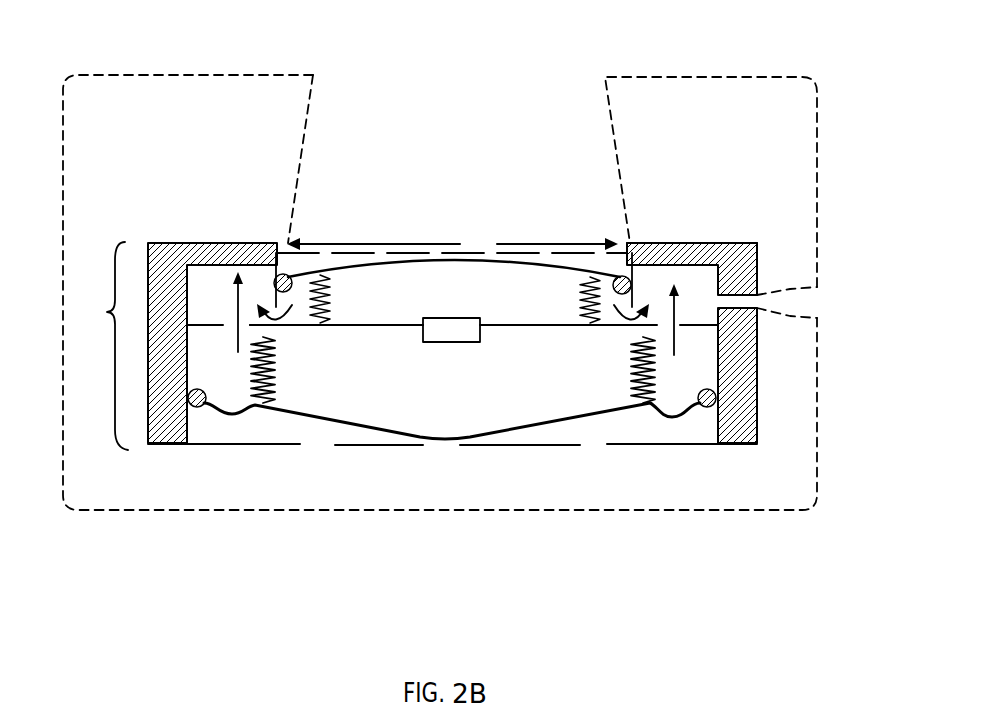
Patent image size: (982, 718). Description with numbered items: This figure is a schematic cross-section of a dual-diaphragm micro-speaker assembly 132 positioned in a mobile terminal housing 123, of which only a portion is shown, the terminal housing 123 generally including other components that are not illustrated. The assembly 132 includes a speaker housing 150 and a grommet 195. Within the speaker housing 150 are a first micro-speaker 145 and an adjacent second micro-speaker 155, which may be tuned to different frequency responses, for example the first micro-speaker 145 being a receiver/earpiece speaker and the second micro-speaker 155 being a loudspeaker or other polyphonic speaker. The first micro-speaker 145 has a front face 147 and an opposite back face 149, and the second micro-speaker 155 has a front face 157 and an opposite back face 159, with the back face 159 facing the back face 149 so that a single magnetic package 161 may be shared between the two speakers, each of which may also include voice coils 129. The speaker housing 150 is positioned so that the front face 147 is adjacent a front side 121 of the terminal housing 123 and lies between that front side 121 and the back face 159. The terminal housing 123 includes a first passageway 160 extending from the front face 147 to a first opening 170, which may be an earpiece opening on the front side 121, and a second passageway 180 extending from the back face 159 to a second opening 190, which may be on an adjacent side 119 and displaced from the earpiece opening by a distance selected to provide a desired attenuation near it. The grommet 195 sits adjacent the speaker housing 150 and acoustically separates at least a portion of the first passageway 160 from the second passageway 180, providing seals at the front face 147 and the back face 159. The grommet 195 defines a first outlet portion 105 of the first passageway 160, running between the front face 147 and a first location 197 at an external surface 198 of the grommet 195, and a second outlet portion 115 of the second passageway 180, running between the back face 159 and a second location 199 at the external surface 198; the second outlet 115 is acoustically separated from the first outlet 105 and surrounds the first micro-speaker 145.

The first outlet portion 105 is at (452, 243).
The second outlet portion 115 is at (214, 288).
The adjacent side 119 is at (62, 258).
The front side 121 is at (652, 75).
The terminal housing 123 is at (813, 503).
The voice coils 129 is at (275, 392).
The dual-diaphragm micro-speaker assembly 132 is at (101, 346).
The first micro-speaker 145 is at (523, 257).
The front face 147 is at (453, 257).
The back face 149 is at (353, 323).
The speaker housing 150 is at (205, 447).
The second micro-speaker 155 is at (503, 448).
The front face 157 is at (437, 448).
The back face 159 is at (410, 327).
The first passageway 160 is at (346, 172).
The magnetic package 161 is at (483, 335).
The first opening 170 is at (501, 90).
The second passageway 180 is at (779, 306).
The second opening 190 is at (824, 302).
The grommet 195 is at (670, 247).
The first location 197 is at (288, 246).
The external surface 198 is at (170, 243).
The second location 199 is at (743, 310).